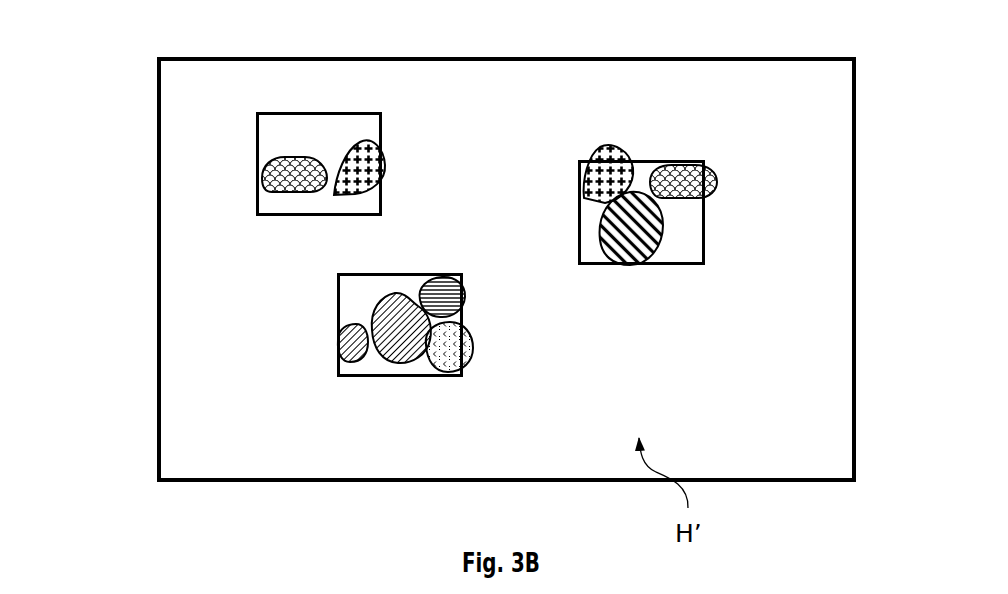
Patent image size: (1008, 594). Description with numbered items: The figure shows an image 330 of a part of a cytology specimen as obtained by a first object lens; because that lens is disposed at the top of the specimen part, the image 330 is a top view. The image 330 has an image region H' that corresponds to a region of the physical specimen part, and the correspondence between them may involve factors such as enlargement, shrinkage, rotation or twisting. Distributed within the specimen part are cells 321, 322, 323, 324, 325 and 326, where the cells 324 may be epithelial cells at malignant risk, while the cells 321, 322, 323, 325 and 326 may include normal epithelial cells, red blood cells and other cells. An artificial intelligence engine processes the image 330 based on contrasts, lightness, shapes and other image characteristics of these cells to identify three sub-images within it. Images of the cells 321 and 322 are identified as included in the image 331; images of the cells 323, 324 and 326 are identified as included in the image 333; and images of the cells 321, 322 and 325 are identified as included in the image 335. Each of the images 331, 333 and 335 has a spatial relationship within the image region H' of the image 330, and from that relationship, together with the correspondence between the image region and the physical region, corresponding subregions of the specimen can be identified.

The image 330 is at (152, 112).
The image 331 is at (389, 175).
The image 333 is at (335, 295).
The image 335 is at (701, 238).
The cell 321 is at (361, 194).
The cell 322 is at (274, 183).
The cell 323 is at (469, 371).
The cell 324 is at (391, 363).
The cell 325 is at (644, 268).
The cell 326 is at (461, 305).